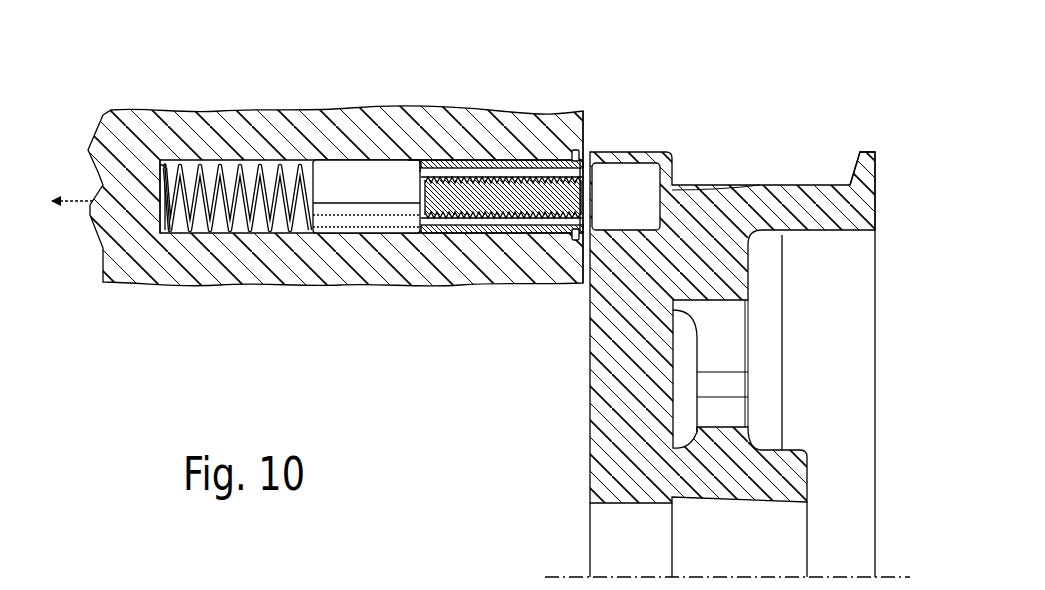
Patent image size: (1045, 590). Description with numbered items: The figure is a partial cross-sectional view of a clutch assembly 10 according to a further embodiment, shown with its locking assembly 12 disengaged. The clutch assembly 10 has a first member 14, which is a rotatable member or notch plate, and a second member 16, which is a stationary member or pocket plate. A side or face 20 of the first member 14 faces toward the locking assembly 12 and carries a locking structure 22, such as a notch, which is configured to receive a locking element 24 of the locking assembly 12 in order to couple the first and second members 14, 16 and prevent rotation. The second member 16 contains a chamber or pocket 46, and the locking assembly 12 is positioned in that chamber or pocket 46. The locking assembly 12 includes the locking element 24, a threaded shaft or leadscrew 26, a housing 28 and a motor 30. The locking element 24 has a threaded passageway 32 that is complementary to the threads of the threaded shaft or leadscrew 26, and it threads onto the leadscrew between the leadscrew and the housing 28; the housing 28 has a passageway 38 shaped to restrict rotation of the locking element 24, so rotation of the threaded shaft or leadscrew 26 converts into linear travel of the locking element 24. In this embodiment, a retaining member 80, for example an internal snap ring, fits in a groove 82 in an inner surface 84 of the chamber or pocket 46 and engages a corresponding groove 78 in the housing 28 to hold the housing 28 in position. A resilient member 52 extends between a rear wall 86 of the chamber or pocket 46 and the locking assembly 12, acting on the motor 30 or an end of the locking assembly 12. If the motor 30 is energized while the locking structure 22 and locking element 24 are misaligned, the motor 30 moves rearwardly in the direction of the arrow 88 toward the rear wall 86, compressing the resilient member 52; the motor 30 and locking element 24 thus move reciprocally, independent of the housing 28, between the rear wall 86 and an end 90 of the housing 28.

The clutch assembly 10 is at (260, 313).
The locking assembly 12 is at (486, 146).
The first member 14 is at (866, 172).
The second member 16 is at (92, 132).
The side or face 20 is at (590, 403).
The locking structure 22 is at (609, 208).
The locking element 24 is at (547, 222).
The threaded shaft or leadscrew 26 is at (432, 160).
The housing 28 is at (497, 222).
The motor 30 is at (325, 185).
The threaded passageway 32 is at (520, 212).
The passageway 38 is at (453, 220).
The chamber or pocket 46 is at (165, 237).
The resilient member 52 is at (195, 170).
The groove 78 is at (582, 157).
The retaining member 80 is at (579, 152).
The groove 82 is at (574, 152).
The inner surface 84 is at (162, 165).
The rear wall 86 is at (165, 178).
The arrow 88 is at (77, 205).
The end of the housing 90 is at (418, 163).